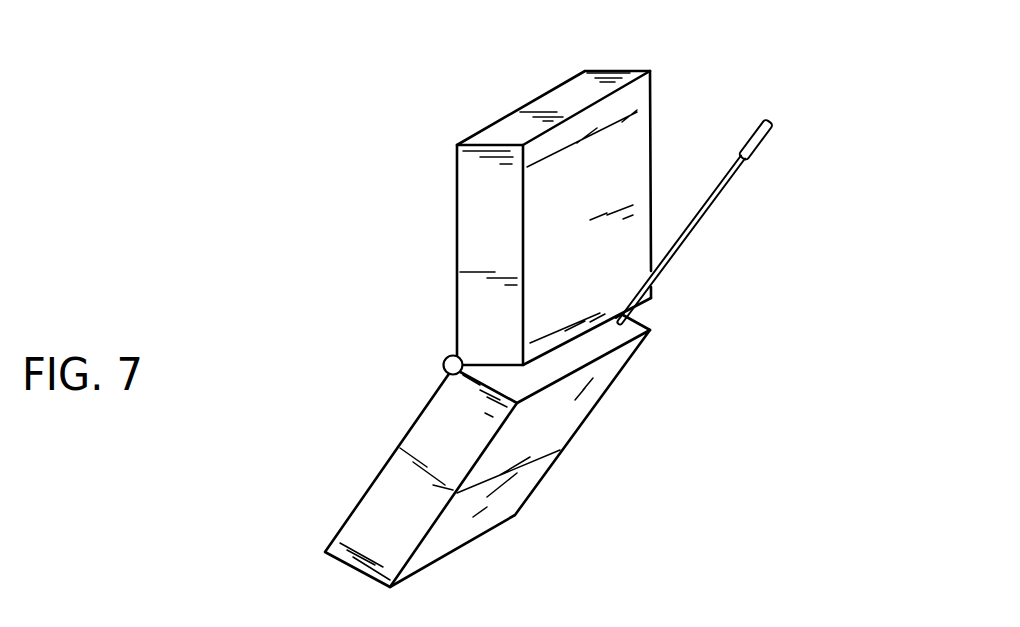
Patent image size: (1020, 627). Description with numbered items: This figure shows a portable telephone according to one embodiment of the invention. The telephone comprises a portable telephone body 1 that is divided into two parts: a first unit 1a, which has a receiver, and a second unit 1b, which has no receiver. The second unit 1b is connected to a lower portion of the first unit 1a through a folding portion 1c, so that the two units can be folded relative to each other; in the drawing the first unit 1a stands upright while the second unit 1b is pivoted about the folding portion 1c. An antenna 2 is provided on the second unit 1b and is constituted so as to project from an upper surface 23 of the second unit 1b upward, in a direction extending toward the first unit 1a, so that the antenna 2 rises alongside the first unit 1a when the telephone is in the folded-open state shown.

The portable telephone body 1 is at (490, 300).
The first unit 1a is at (588, 83).
The second unit 1b is at (373, 543).
The folding portion 1c is at (443, 363).
The antenna 2 is at (769, 122).
The upper surface 23 is at (575, 353).